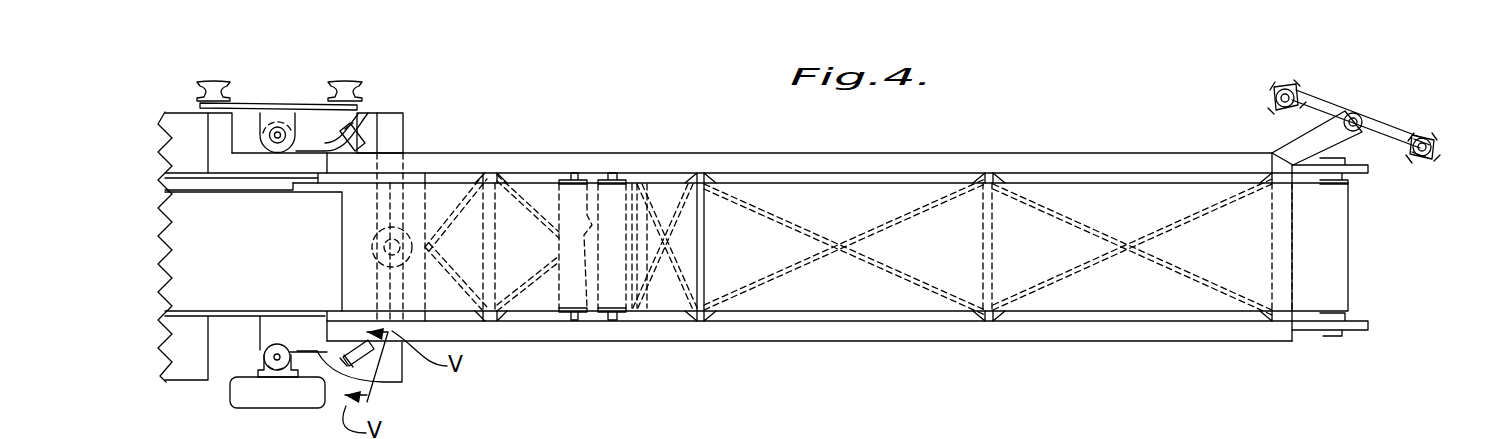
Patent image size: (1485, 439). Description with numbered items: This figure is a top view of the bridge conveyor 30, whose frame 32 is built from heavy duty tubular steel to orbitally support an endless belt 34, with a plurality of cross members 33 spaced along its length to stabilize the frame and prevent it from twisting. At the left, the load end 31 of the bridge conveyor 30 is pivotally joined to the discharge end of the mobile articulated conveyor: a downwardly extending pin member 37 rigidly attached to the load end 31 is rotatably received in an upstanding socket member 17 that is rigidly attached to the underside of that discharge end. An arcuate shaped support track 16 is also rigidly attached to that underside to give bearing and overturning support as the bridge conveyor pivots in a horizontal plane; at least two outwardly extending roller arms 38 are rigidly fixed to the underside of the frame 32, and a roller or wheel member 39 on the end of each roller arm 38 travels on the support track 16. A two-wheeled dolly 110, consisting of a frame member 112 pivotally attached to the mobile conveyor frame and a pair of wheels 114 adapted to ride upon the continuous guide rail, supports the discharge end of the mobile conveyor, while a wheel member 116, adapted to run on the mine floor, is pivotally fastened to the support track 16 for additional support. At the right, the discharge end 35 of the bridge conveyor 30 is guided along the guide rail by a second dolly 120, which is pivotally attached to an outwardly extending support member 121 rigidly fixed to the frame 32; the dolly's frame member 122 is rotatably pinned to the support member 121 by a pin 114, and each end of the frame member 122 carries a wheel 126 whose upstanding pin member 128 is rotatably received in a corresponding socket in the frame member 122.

The two-wheeled dolly 110 is at (266, 86).
The wheels / pin 114 is at (201, 80).
The frame member 112 is at (283, 117).
The roller or wheel member 39 is at (323, 141).
The roller arm 38 is at (361, 138).
The support track 16 is at (401, 131).
The frame 32 is at (794, 161).
The bridge conveyor 30 is at (766, 353).
The load end 31 is at (684, 350).
The cross members 33 is at (1095, 292).
The endless belt 34 is at (1252, 255).
The upstanding socket member 17 is at (372, 241).
The pin member 37 is at (373, 265).
The wheel member 116 is at (268, 396).
The discharge end 35 is at (1308, 349).
The support member 121 is at (1298, 143).
The second dolly 120 is at (1340, 86).
The wheel 126 is at (1272, 92).
The frame member 122 is at (1380, 133).
The upstanding pin member 128 is at (1411, 158).